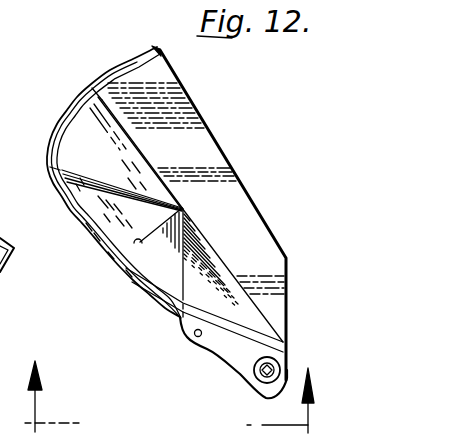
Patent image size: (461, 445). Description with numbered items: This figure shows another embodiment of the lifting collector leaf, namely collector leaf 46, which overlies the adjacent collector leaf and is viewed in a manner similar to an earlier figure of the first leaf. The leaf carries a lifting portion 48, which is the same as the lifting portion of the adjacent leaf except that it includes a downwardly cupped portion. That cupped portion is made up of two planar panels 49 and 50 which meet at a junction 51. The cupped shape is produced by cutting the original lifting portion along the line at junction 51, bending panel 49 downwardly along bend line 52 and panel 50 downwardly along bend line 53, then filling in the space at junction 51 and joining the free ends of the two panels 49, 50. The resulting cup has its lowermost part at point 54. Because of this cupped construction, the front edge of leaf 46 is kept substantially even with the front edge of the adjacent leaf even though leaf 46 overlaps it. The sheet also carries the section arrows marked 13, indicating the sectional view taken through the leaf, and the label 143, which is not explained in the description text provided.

The collector leaf 46 is at (212, 132).
The lifting portion 48 is at (77, 137).
The bend line 52 is at (88, 177).
The planar panel 49 is at (94, 212).
The junction 51 is at (113, 262).
The lowermost point 54 is at (134, 278).
The planar panel 50 is at (170, 288).
The bend line 53 is at (180, 312).
The blade assembly 143 is at (41, 22).
The section line 13- 13 is at (171, 402).